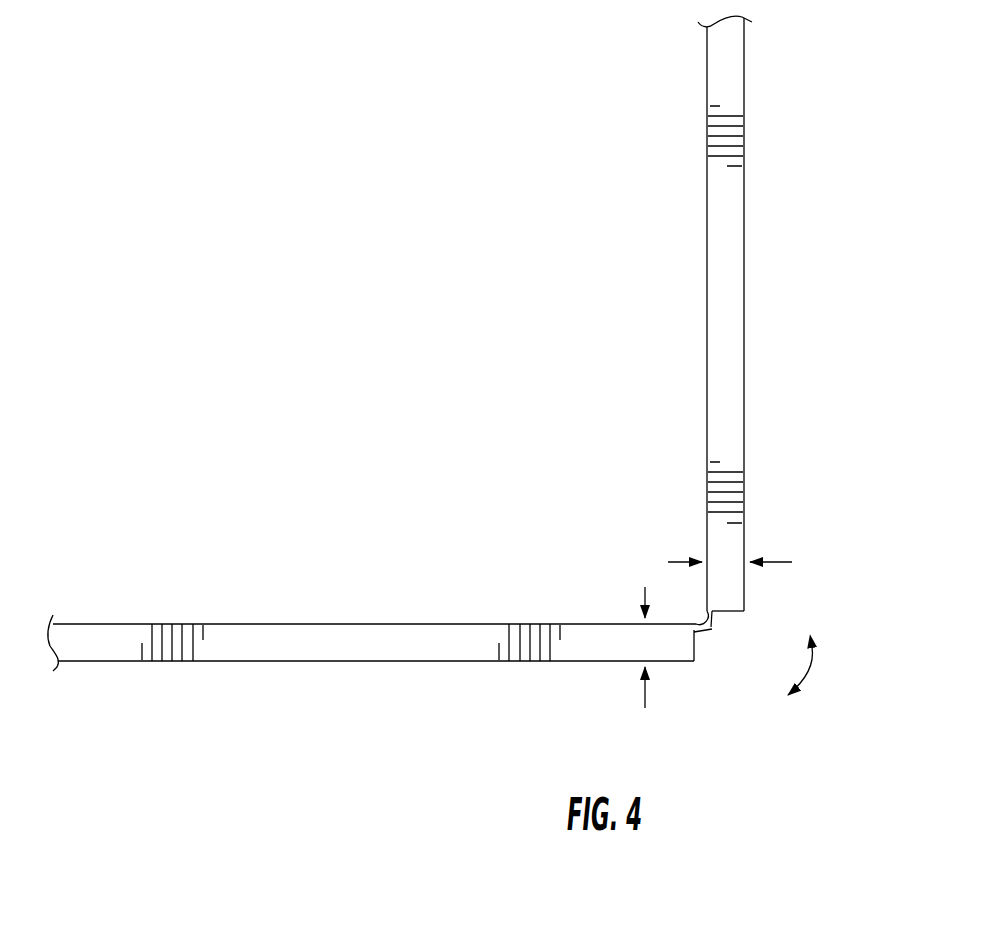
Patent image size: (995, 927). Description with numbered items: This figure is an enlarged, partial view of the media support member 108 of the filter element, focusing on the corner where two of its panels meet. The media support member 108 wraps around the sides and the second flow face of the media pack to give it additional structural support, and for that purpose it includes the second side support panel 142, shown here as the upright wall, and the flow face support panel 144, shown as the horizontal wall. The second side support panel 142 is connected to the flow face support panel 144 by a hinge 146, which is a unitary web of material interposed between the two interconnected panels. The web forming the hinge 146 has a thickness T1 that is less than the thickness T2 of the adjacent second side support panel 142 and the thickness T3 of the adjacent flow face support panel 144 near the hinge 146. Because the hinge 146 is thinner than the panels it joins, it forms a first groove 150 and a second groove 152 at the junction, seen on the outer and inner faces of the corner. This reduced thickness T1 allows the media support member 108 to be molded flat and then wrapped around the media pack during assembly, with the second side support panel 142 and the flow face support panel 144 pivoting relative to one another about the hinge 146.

The media support member 108 is at (768, 313).
The second side support panel 142 is at (745, 424).
The flow face support panel 144 is at (452, 661).
The hinge 146 is at (771, 705).
The first groove 150 is at (701, 615).
The second groove 152 is at (720, 661).
The hinge web thickness T1 is at (727, 629).
The side support panel thickness T2 is at (775, 562).
The flow face support panel thickness T3 is at (645, 688).